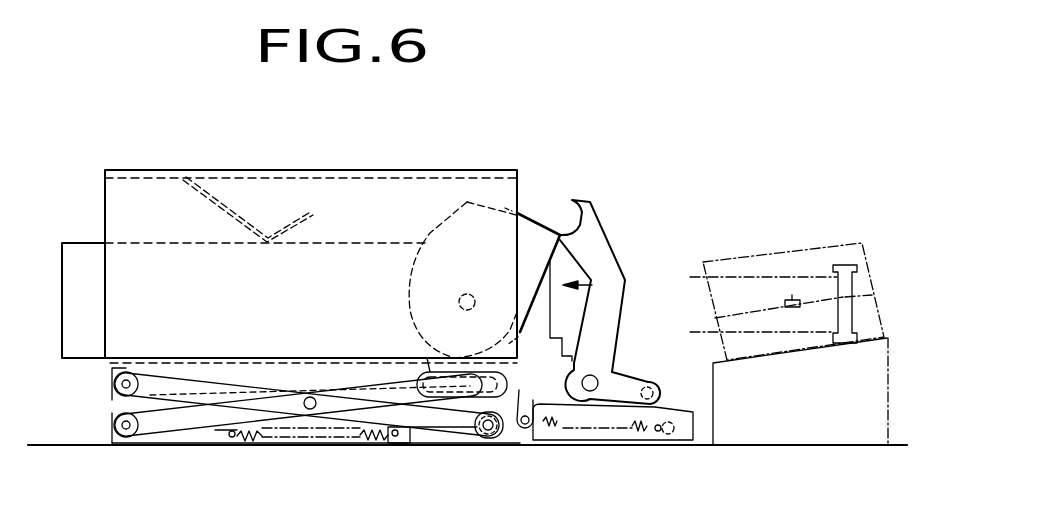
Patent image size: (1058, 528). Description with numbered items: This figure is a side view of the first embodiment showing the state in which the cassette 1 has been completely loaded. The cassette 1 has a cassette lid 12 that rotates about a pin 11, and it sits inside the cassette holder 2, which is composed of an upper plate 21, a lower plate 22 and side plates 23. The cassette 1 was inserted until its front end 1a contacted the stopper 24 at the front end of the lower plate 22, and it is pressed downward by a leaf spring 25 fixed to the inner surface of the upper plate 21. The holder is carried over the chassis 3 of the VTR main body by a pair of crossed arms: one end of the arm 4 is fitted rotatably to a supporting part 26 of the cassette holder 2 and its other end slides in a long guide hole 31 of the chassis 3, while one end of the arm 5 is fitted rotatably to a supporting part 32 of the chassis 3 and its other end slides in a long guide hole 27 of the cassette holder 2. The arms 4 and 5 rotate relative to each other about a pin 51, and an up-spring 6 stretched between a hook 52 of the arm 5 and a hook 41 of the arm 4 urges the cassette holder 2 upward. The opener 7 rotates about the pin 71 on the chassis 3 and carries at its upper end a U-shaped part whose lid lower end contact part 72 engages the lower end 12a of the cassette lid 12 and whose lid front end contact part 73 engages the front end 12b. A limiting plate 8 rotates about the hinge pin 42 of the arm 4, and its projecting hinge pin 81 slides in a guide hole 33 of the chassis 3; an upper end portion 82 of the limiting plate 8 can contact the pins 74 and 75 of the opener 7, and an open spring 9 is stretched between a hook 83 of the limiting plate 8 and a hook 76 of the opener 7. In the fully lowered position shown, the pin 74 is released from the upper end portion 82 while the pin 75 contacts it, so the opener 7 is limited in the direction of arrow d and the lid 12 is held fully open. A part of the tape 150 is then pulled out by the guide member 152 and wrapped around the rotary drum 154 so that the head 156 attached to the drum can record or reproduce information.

The cassette 1 is at (84, 262).
The front end of the cassette 1a is at (583, 342).
The cassette holder 2 is at (142, 166).
The chassis 3 is at (78, 447).
The arm 4 is at (172, 372).
The arm 5 is at (352, 390).
The up-spring 6 is at (287, 447).
The opener 7 is at (620, 290).
The limiting plate 8 is at (598, 412).
The open spring 9 is at (620, 412).
The pin 11 is at (462, 298).
The cassette lid 12 is at (534, 238).
The lower end of the cassette lid 12a is at (565, 262).
The front end of the cassette lid 12b is at (552, 248).
The upper plate 21 is at (476, 168).
The lower plate 22 is at (222, 368).
The side plates 23 is at (385, 202).
The stopper 24 is at (567, 353).
The leaf spring 25 is at (238, 215).
The supporting part 26 is at (112, 384).
The guide hole 27 is at (427, 358).
The guide hole 31 is at (445, 437).
The supporting part 32 is at (125, 447).
The guide hole 33 is at (680, 440).
The hook 41 is at (392, 443).
The hinge pin 42 is at (490, 440).
The pin 51 is at (308, 397).
The hook 52 is at (222, 447).
The pin 71 is at (593, 368).
The lid lower end contact part 72 is at (567, 243).
The lid front end contact part 73 is at (574, 201).
The pin 74 is at (505, 438).
The pin 75 is at (700, 408).
The hook 76 is at (528, 426).
The projecting hinge pin 81 is at (712, 425).
The upper end portion 82 is at (572, 440).
The hook 83 is at (656, 432).
The tape 150 is at (740, 293).
The guide member 152 is at (817, 345).
The rotary drum 154 is at (825, 258).
The head 156 is at (792, 297).